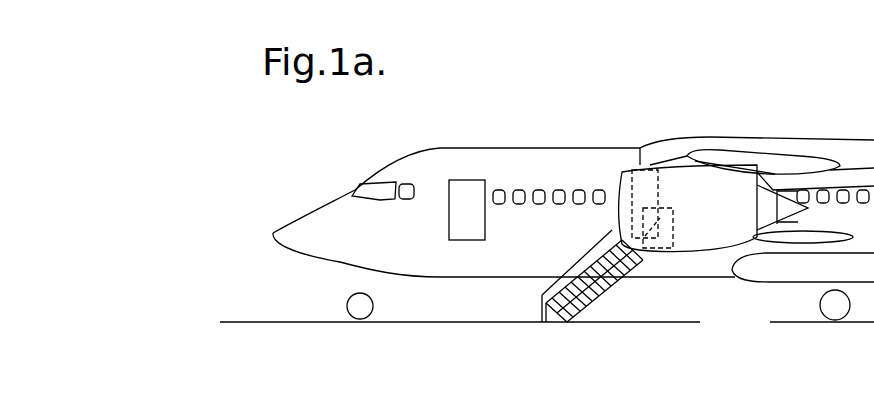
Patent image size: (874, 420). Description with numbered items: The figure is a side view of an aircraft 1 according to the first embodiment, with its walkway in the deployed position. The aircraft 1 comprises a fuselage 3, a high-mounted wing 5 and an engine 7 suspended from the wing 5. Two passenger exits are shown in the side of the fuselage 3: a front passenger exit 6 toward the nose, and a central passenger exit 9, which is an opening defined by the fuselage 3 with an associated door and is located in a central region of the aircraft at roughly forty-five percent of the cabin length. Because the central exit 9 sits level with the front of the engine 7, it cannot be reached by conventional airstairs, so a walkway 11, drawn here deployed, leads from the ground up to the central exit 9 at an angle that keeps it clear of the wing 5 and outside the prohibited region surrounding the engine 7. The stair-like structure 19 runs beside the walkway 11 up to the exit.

The aircraft 1 is at (317, 178).
The fuselage 3 is at (460, 168).
The high-mounted wing 5 is at (747, 132).
The front passenger exit 6 is at (465, 222).
The engine 7 is at (722, 229).
The central passenger exit 9 is at (635, 186).
The walkway 11 is at (630, 289).
The boarding stairs 19 is at (613, 225).